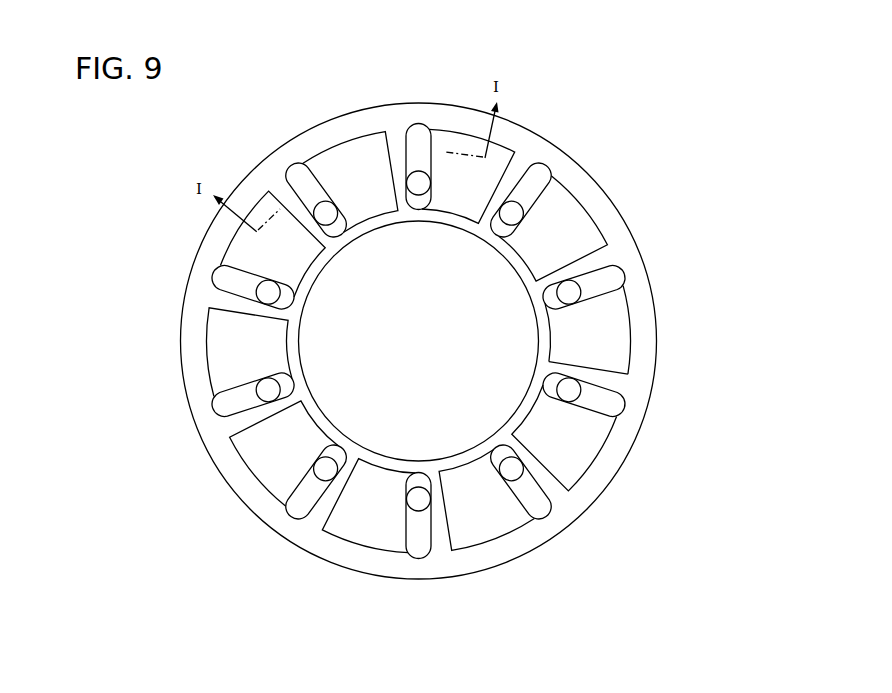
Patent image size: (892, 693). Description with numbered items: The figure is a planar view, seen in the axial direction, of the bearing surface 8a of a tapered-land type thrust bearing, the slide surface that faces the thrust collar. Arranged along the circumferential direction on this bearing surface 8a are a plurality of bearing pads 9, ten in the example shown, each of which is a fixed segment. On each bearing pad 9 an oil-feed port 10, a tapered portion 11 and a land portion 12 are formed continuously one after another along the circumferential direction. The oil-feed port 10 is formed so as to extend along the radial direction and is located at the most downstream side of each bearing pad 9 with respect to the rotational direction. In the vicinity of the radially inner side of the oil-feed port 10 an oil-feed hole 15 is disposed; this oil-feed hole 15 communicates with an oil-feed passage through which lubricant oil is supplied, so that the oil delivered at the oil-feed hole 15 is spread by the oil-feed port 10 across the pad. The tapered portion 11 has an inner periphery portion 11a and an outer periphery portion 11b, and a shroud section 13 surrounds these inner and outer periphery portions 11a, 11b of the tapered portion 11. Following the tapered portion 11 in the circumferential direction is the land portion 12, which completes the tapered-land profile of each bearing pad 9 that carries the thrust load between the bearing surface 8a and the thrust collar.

The bearing surface 8a is at (663, 166).
The bearing pad 9 is at (558, 119).
The oil-feed port 10 is at (609, 280).
The tapered portion 11 is at (599, 361).
The inner periphery portion 11a is at (547, 355).
The outer periphery portion 11b is at (607, 350).
The land portion 12 is at (622, 383).
The shroud section 13 is at (642, 306).
The oil-feed hole 15 is at (566, 292).